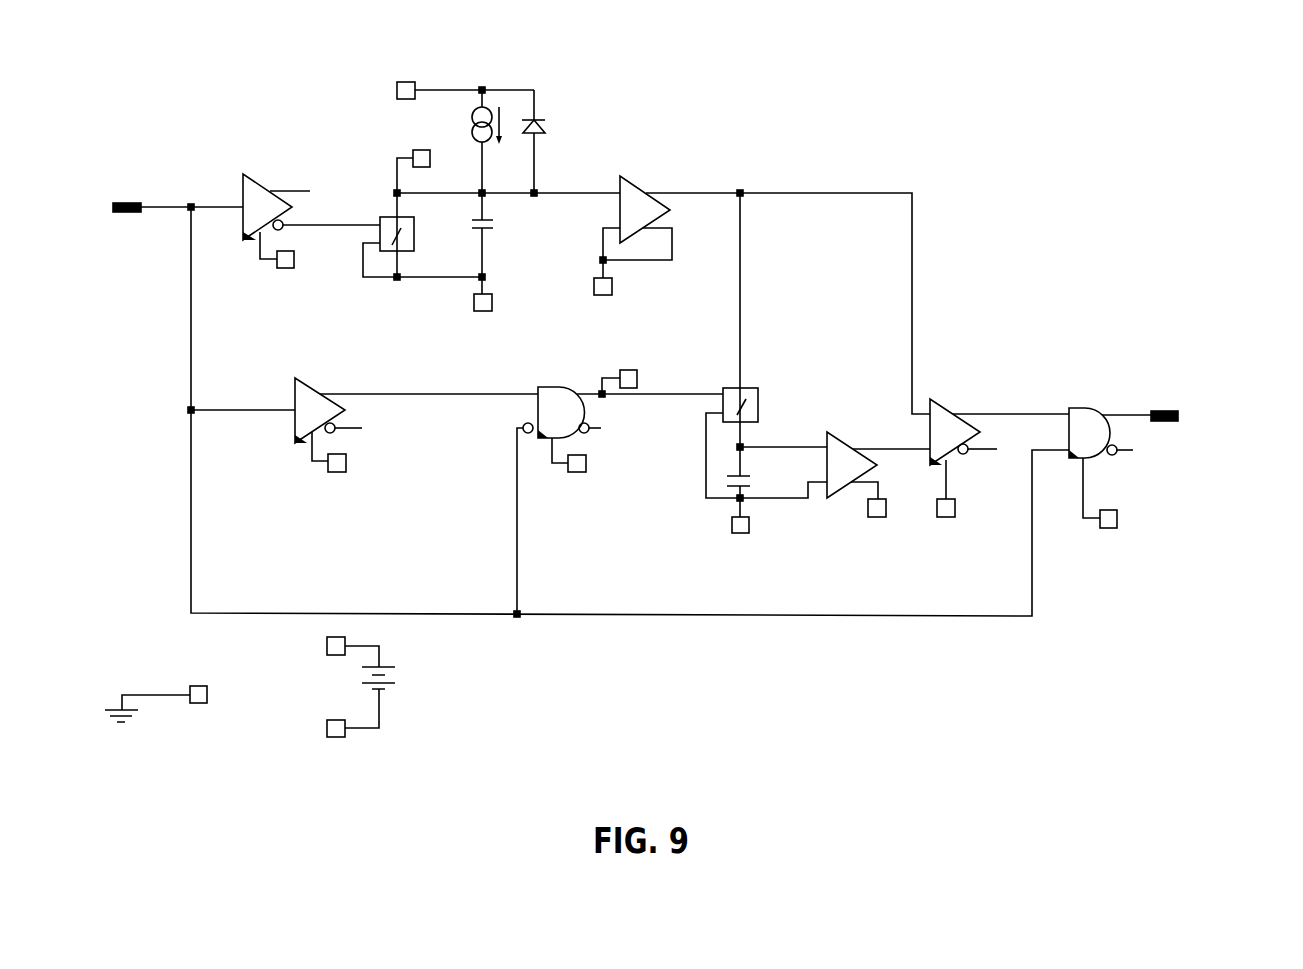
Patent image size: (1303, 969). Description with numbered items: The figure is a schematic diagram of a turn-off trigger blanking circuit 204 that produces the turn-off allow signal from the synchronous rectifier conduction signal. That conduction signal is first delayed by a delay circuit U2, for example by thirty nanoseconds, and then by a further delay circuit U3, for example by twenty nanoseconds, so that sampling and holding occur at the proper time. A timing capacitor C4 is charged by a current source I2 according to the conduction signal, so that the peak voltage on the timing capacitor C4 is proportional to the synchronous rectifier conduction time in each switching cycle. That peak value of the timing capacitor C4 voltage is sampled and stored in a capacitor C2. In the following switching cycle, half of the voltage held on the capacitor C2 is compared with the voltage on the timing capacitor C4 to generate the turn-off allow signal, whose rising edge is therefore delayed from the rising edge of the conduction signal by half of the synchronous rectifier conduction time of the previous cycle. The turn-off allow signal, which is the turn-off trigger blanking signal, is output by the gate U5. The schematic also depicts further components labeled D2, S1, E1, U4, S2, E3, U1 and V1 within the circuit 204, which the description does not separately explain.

The turn-off trigger blanking circuit 204 is at (283, 50).
The current source I2 is at (467, 118).
The diode D2 is at (561, 124).
The delay circuit U2 is at (276, 195).
The switch S1 is at (415, 230).
The timing capacitor C4 is at (499, 229).
The voltage-controlled voltage source E1 is at (645, 208).
The delay circuit U3 is at (320, 404).
The AND gate U4 is at (556, 404).
The switch S2 is at (743, 401).
The capacitor C2 is at (754, 476).
The voltage-controlled voltage source E3 is at (852, 465).
The comparator U1 is at (955, 422).
The gate U5 is at (1093, 418).
The bias voltage source V1 is at (390, 669).